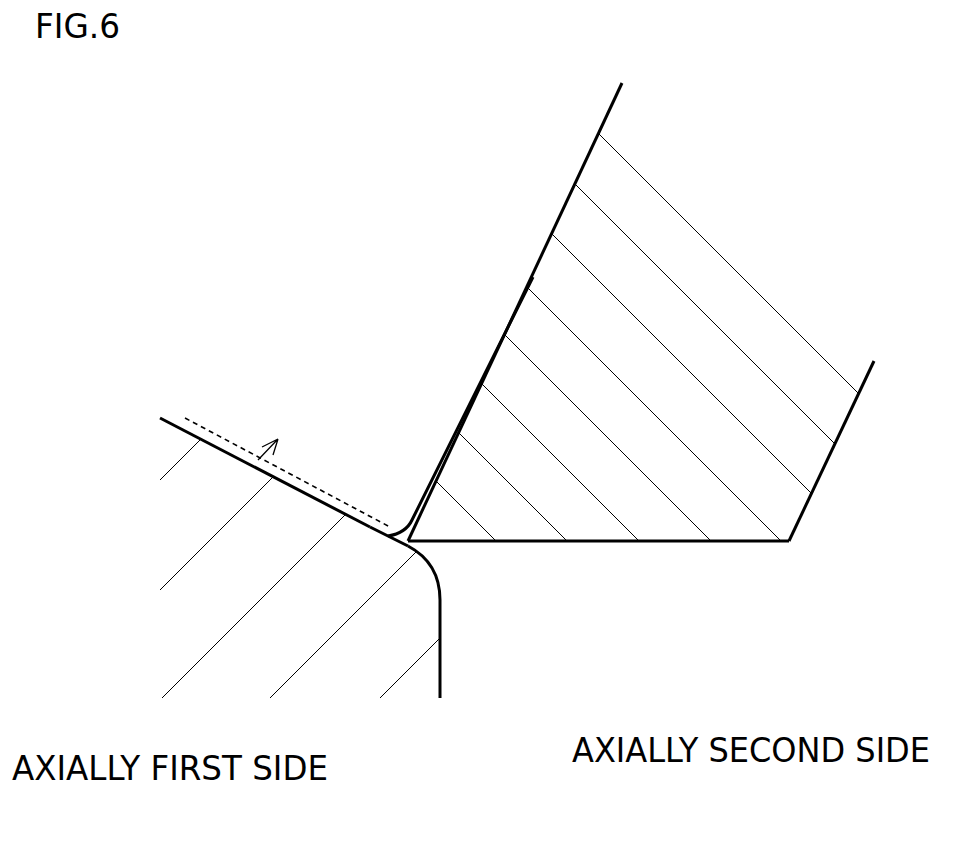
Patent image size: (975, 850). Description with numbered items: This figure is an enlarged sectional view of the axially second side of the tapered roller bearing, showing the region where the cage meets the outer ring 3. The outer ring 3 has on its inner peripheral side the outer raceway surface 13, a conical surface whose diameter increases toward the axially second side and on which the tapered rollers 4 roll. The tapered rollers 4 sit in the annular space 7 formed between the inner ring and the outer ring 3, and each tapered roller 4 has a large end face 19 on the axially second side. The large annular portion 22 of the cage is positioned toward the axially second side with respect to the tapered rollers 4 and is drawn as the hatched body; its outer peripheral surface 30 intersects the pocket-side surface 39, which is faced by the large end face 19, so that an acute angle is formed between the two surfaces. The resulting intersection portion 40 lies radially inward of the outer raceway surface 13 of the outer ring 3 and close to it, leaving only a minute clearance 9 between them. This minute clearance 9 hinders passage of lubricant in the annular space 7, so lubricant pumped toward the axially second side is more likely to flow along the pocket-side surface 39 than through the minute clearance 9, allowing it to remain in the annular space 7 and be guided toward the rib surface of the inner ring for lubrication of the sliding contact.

The outer ring 3 is at (385, 642).
The tapered roller 4 is at (315, 467).
The annular space 7 is at (252, 468).
The minute clearance 9 is at (425, 553).
The outer raceway surface 13 is at (233, 453).
The large end face 19 is at (466, 417).
The large annular portion 22 is at (684, 472).
The outer peripheral surface 30 is at (592, 541).
The pocket-side surface 39 is at (442, 460).
The intersection portion 40 is at (403, 547).